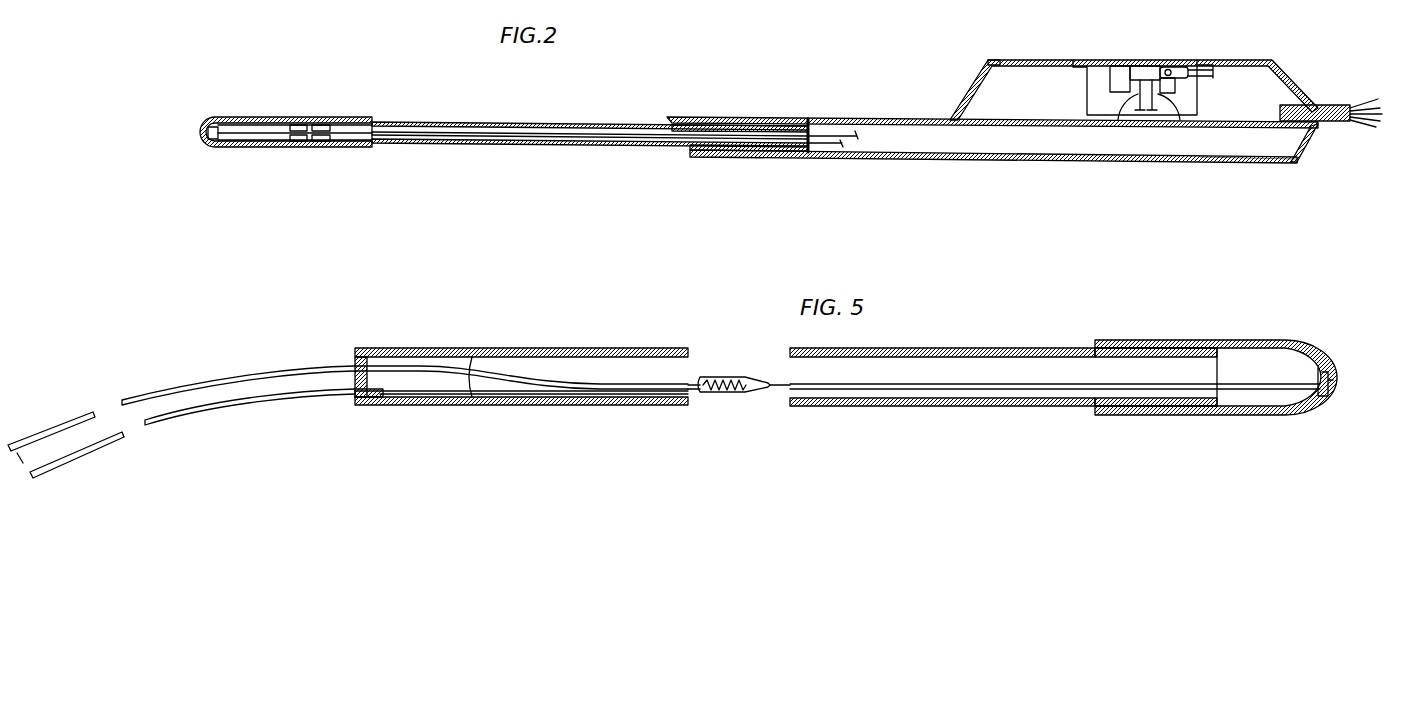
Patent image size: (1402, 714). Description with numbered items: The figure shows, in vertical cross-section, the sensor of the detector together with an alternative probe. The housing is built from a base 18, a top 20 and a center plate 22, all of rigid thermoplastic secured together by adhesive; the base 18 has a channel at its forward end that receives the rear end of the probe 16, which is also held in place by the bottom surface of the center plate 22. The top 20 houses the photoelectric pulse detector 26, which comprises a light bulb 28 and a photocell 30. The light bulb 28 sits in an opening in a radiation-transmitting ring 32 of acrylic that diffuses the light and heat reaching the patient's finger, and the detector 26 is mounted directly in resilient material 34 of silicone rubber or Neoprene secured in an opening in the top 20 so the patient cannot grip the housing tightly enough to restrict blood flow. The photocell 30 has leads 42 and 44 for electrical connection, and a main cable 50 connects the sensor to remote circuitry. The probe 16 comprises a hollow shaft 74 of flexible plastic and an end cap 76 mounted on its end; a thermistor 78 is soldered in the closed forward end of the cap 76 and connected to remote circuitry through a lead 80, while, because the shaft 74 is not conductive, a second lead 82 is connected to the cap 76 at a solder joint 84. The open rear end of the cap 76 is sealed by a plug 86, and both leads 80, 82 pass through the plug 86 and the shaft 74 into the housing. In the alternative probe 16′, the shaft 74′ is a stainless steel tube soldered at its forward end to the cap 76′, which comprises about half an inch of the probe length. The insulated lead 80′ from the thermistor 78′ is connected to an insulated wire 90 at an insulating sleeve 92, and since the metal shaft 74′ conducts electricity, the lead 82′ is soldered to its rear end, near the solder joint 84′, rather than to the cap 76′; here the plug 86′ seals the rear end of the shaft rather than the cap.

In FIG. 2, the probe 16 is at (472, 126).
In FIG. 2, the base 18 is at (1273, 163).
In FIG. 2, the top 20 is at (1268, 60).
In FIG. 2, the center plate 22 is at (1010, 120).
In FIG. 2, the photoelectric pulse detector 26 is at (1146, 76).
In FIG. 2, the light bulb 28 is at (1175, 65).
In FIG. 2, the photocell 30 is at (1147, 68).
In FIG. 2, the radiation-transmitting ring 32 is at (1177, 87).
In FIG. 2, the resilient material 34 is at (1105, 72).
In FIG. 2, the lead 42 is at (1122, 102).
In FIG. 2, the lead 44 is at (1156, 100).
In FIG. 2, the main cable 50 is at (1333, 106).
In FIG. 2, the hollow shaft 74 is at (562, 122).
In FIG. 2, the end cap 76 is at (263, 117).
In FIG. 2, the thermistor 78 is at (200, 134).
In FIG. 2, the lead 80 is at (820, 128).
In FIG. 2, the second lead 82 is at (826, 147).
In FIG. 2, the solder joint 84 is at (272, 136).
In FIG. 2, the plug 86 is at (317, 150).
In FIG. 5, the probe 16′ is at (521, 358).
In FIG. 5, the shaft 74′ is at (553, 348).
In FIG. 5, the cap 76′ is at (1222, 342).
In FIG. 5, the thermistor 78′ is at (1338, 398).
In FIG. 5, the lead 80′ is at (963, 406).
In FIG. 5, the lead 82′ is at (205, 405).
In FIG. 5, the connector block 84′ is at (376, 400).
In FIG. 5, the plug 86′ is at (413, 347).
In FIG. 5, the insulated wire 90 is at (262, 373).
In FIG. 5, the insulating sleeve 92 is at (722, 377).